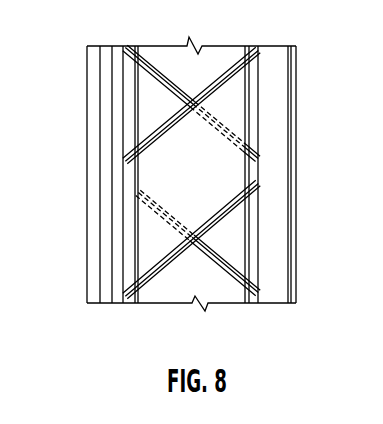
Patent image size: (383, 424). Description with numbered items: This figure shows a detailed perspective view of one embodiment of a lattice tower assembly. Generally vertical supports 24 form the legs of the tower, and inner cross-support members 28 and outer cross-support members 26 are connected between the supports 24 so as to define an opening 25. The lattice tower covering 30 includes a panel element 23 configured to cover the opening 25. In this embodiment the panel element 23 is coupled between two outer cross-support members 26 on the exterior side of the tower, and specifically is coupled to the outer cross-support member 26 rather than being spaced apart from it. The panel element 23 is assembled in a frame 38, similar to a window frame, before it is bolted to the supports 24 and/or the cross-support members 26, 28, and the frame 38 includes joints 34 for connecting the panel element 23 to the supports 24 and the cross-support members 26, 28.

The panel element 23 is at (152, 237).
The support 24 is at (98, 132).
The opening 25 is at (213, 283).
The outer cross-support member 26 is at (230, 208).
The inner cross-support member 28 is at (160, 77).
The lattice tower covering 30 is at (238, 104).
The joint 34 is at (225, 74).
The frame 38 is at (130, 227).